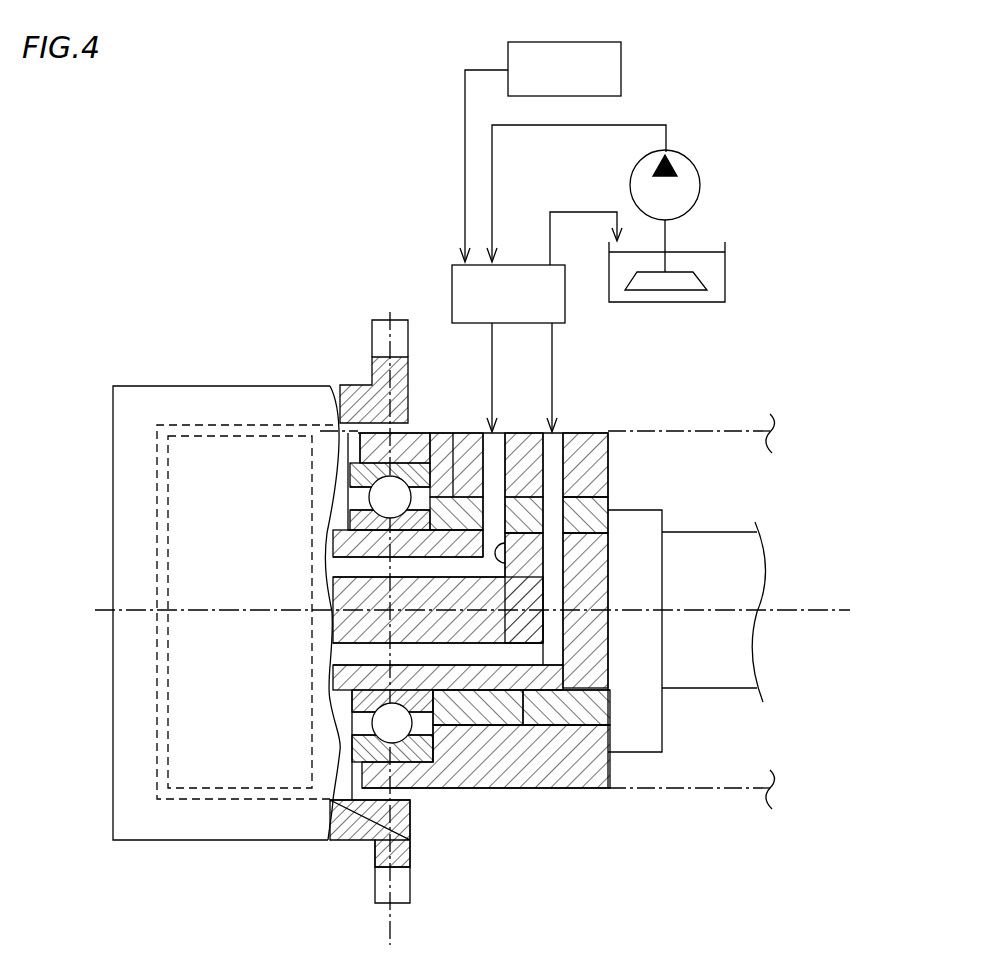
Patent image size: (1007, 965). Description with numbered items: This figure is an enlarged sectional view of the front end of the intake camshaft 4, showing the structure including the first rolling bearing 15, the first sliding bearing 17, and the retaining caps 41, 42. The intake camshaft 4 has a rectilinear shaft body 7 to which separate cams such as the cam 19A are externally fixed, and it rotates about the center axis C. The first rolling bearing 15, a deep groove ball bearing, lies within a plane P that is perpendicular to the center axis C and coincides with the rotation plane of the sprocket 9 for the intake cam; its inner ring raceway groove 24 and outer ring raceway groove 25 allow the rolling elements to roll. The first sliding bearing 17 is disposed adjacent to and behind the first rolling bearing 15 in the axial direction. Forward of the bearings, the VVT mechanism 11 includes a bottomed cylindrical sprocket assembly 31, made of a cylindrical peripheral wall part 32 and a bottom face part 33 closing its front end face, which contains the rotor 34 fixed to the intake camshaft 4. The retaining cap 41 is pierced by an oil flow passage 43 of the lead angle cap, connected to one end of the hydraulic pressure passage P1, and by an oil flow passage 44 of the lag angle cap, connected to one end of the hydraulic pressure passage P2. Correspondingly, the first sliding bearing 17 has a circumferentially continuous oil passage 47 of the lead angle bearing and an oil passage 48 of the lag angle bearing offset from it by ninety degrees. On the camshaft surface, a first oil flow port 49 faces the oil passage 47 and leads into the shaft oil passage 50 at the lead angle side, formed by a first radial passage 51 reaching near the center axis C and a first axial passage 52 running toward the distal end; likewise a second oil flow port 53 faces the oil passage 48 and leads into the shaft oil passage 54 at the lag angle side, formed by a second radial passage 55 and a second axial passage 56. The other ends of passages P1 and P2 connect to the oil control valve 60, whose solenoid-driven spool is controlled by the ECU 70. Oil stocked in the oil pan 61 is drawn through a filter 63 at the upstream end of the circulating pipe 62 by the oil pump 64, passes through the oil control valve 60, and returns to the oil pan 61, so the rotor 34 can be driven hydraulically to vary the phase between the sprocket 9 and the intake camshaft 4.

The intake camshaft 4 is at (718, 530).
The shaft body 7 is at (745, 652).
The sprocket for the intake cam 9 is at (372, 373).
The VVT mechanism 11 is at (200, 384).
The first rolling bearing 15 is at (370, 458).
The first sliding bearing 17 is at (603, 510).
The cam 19A is at (665, 722).
The inner ring raceway groove 24 is at (436, 748).
The outer ring raceway groove 25 is at (398, 742).
The sprocket assembly 31 is at (127, 888).
The peripheral wall part 32 is at (217, 815).
The bottom face part 33 is at (133, 740).
The rotor 34 is at (263, 763).
The retaining cap 41 is at (583, 440).
The retaining cap 42 is at (510, 780).
The oil flow passage of lead angle cap 43 is at (483, 465).
The oil flow passage of lag angle cap 44 is at (533, 462).
The oil passage of lead angle bearing 47 is at (455, 462).
The oil passage of lag angle bearing 48 is at (555, 513).
The first oil flow port at outer peripheral side 49 is at (548, 537).
The shaft oil passage at lead angle side 50 is at (253, 520).
The first radial passage 51 is at (480, 528).
The first axial passage 52 is at (435, 563).
The second oil flow port at outer peripheral side 53 is at (560, 525).
The shaft oil passage at lag angle side 54 is at (518, 832).
The second radial passage 55 is at (553, 622).
The second axial passage 56 is at (490, 653).
The oil control valve 60 is at (452, 281).
The oil pan 61 is at (725, 262).
The circulating pipe 62 is at (492, 182).
The filter 63 is at (690, 291).
The oil pump 64 is at (700, 185).
The ECU 70 is at (621, 68).
The plane P is at (388, 924).
The hydraulic pressure passage at lead angle side P1 is at (490, 342).
The hydraulic pressure passage at lag angle side P2 is at (554, 342).
The center axis C is at (825, 606).